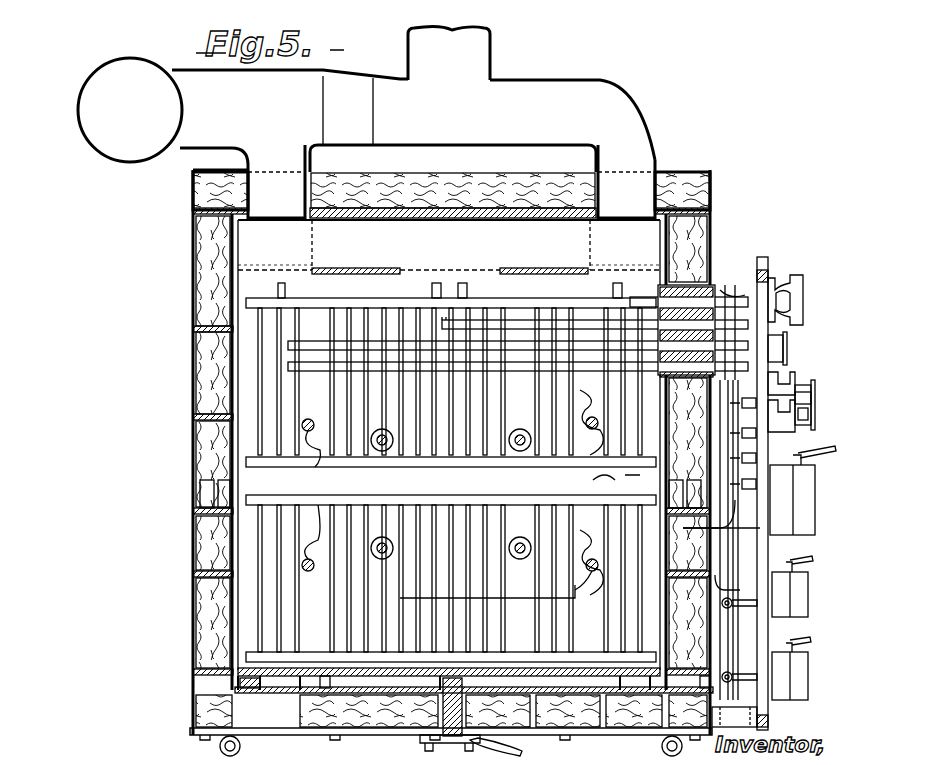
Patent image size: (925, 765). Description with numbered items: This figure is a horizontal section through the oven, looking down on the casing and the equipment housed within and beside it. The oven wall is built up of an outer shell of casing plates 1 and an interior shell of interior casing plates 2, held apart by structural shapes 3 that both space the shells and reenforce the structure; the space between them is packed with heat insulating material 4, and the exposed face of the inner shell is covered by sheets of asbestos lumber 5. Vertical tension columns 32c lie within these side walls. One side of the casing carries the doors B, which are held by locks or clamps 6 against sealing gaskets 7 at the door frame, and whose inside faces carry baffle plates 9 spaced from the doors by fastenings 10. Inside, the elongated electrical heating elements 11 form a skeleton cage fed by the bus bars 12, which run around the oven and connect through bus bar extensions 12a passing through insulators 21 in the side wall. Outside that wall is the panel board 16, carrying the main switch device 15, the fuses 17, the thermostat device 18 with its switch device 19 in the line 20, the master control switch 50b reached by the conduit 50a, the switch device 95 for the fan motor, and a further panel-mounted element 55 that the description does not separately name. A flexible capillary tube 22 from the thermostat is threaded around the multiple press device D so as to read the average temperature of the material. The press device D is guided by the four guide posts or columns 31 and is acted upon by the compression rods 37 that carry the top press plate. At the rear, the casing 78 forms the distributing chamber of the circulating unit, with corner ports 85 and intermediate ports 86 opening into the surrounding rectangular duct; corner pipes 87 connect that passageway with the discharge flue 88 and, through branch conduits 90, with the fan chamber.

The casing plates 1 is at (395, 180).
The interior casing plates 2 is at (432, 210).
The structural shapes 3 is at (168, 596).
The heat insulating material 4 is at (415, 185).
The sheets of asbestos lumber 5 is at (430, 215).
The locks or clamps 6 is at (471, 721).
The sealing gaskets 7 is at (230, 680).
The baffle plates 9 is at (275, 668).
The fastenings 10 is at (230, 690).
The electrical heating elements 11 is at (332, 340).
The bus bars 12 is at (508, 500).
The bus bar extensions 12a is at (720, 300).
The main switch device 15 is at (803, 490).
The panel board 16 is at (760, 552).
The fuses 17 is at (756, 460).
The thermostat device 18 is at (800, 285).
The switch device 19 is at (790, 390).
The line 20 is at (734, 584).
The insulators 21 is at (700, 260).
The flexible capillary tube 22 is at (595, 480).
The guide posts or columns 31 is at (308, 418).
The vertical tension columns 32c is at (780, 520).
The compression rods 37 is at (382, 430).
The conduit 50a is at (733, 665).
The master control switch 50b is at (792, 700).
The fuse block 55 is at (785, 350).
The casing 78 is at (449, 248).
The corner ports 85 is at (312, 270).
The intermediate ports 86 is at (495, 266).
The corner pipes 87 is at (451, 181).
The discharge flue 88 is at (572, 68).
The branch conduits 90 is at (470, 50).
The switch device 95 is at (792, 617).
The doors B is at (390, 740).
The multiple press device D is at (524, 398).